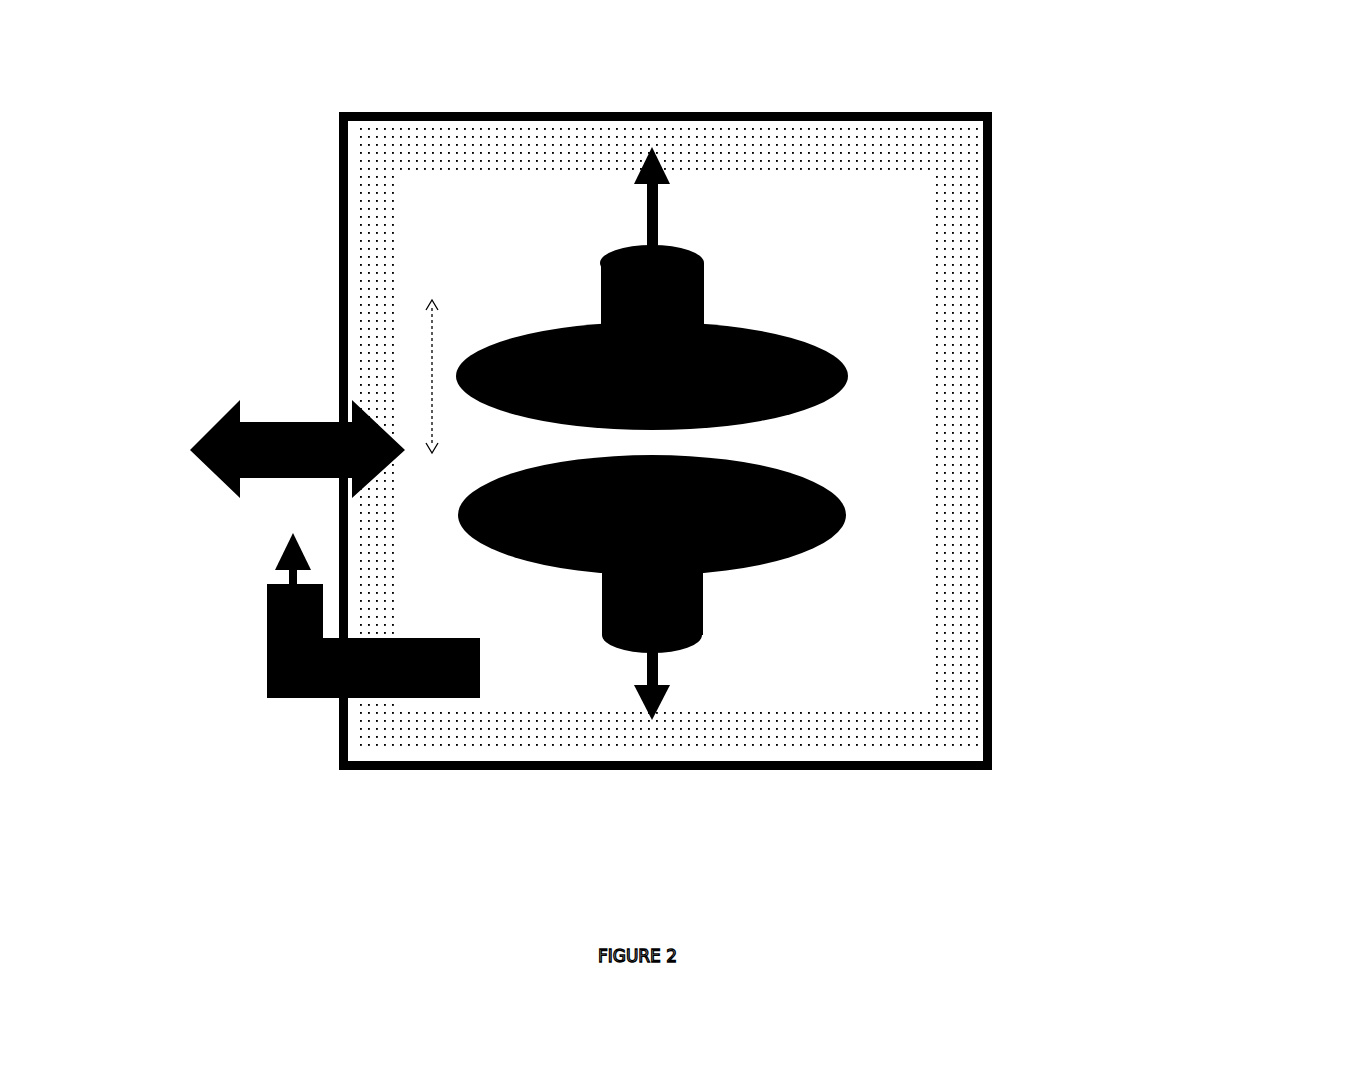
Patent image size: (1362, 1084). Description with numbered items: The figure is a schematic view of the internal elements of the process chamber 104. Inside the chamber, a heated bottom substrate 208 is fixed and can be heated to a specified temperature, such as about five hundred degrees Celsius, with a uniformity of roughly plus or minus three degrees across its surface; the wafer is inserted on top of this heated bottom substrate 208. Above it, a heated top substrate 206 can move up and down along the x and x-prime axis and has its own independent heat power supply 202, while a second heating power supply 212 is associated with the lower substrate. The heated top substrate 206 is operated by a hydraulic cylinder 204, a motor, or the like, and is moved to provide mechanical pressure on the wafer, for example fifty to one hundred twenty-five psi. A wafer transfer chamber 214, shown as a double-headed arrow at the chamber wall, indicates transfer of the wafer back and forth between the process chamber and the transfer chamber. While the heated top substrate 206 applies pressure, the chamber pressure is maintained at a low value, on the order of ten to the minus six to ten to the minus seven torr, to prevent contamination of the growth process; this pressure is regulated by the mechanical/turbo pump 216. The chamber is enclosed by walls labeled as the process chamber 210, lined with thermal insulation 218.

The process chamber 104 is at (719, 488).
The heat power supply 202 is at (665, 192).
The hydraulic cylinder 204 is at (700, 297).
The heated top substrate 206 is at (845, 388).
The heated bottom substrate 208 is at (854, 502).
The process chamber 210 is at (1000, 602).
The heating power supply 212 is at (667, 672).
The wafer transfer chamber 214 is at (191, 432).
The mechanical/turbo pump 216 is at (285, 613).
The thermal insulation 218 is at (798, 131).